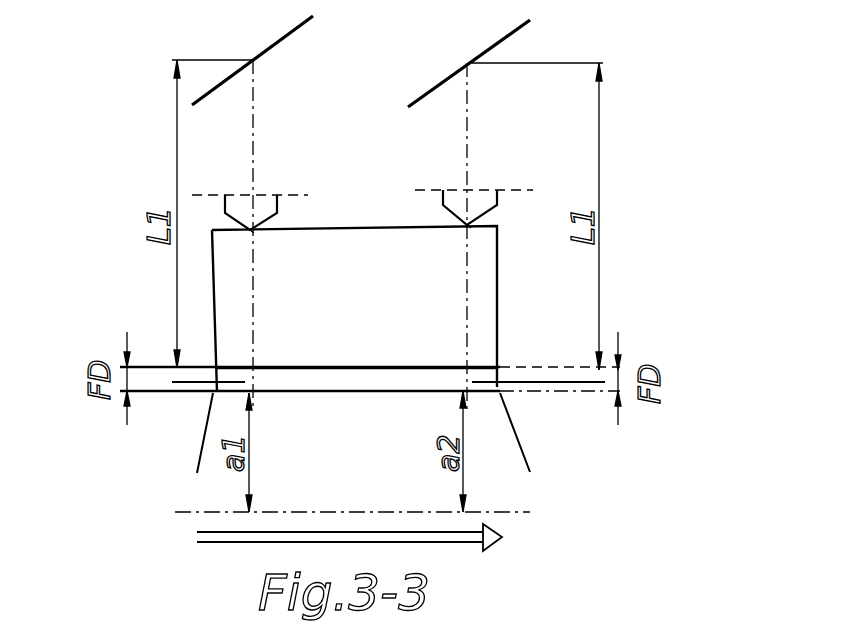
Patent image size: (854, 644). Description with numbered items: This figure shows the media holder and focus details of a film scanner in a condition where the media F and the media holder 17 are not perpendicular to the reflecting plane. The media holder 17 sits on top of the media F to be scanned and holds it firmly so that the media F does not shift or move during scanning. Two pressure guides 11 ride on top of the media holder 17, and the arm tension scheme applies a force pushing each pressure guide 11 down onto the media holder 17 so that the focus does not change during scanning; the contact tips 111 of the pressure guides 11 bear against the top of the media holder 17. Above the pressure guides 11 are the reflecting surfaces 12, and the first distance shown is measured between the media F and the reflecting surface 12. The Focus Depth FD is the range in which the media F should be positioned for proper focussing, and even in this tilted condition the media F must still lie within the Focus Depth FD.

The pressure guide 11 is at (263, 205).
The reflecting surface 12 is at (283, 43).
The media holder 17 is at (483, 308).
The nozzle tip 111 is at (253, 232).
The media F is at (378, 377).